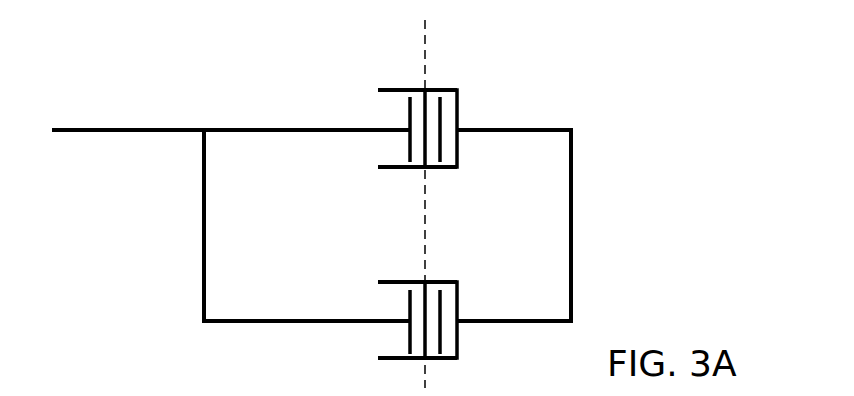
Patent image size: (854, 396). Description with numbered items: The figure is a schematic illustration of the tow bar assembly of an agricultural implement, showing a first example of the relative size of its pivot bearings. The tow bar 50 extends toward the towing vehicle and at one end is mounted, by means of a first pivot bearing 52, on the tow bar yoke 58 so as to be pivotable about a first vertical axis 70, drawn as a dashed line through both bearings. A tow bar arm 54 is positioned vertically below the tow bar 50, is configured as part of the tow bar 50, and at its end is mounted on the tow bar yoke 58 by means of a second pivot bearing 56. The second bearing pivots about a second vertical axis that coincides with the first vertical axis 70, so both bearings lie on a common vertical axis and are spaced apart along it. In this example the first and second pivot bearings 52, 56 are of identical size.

The tow bar 50 is at (277, 128).
The first pivot bearing 52 is at (401, 90).
The tow bar arm 54 is at (203, 270).
The second pivot bearing 56 is at (396, 282).
The tow bar yoke 58 is at (572, 252).
The first vertical axis 70 is at (426, 45).